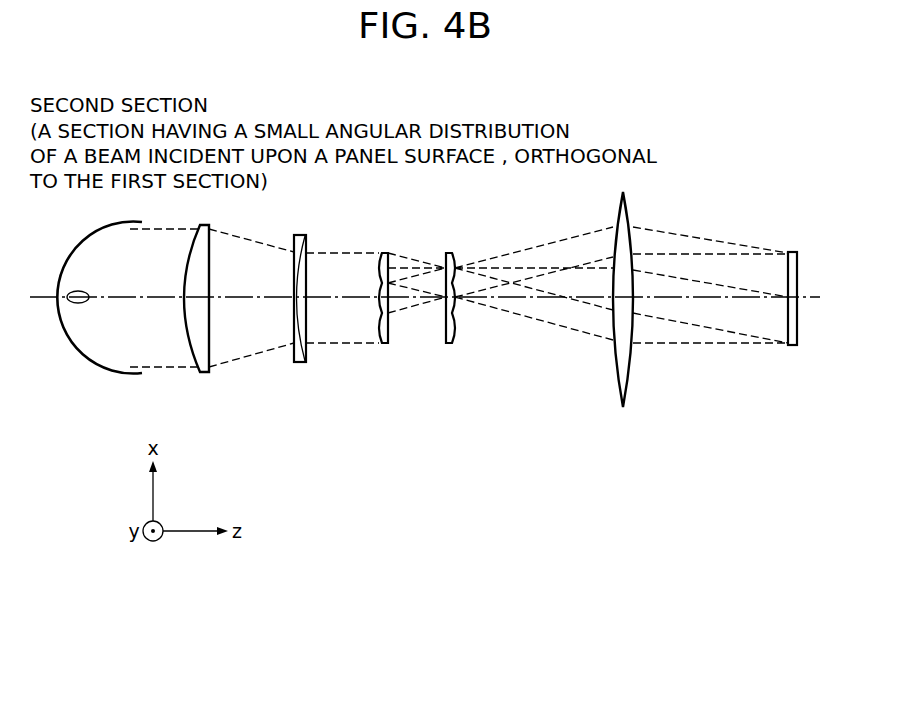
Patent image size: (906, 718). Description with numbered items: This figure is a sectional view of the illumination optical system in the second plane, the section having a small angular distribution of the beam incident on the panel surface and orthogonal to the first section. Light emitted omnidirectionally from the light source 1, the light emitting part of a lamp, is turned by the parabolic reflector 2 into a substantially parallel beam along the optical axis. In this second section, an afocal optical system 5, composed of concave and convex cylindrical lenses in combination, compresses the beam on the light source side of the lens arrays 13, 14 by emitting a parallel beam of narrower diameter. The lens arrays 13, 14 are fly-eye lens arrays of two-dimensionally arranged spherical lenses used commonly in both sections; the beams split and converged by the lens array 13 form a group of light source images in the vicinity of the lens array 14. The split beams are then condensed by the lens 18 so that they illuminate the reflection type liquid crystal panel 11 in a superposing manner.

The light source 1 is at (83, 303).
The parabolic reflector 2 is at (108, 362).
The afocal optical system 5 is at (205, 372).
The lens array 13 is at (385, 343).
The lens array 14 is at (450, 343).
The condenser lens 18 is at (622, 407).
The reflection type liquid crystal panel 11 is at (793, 345).